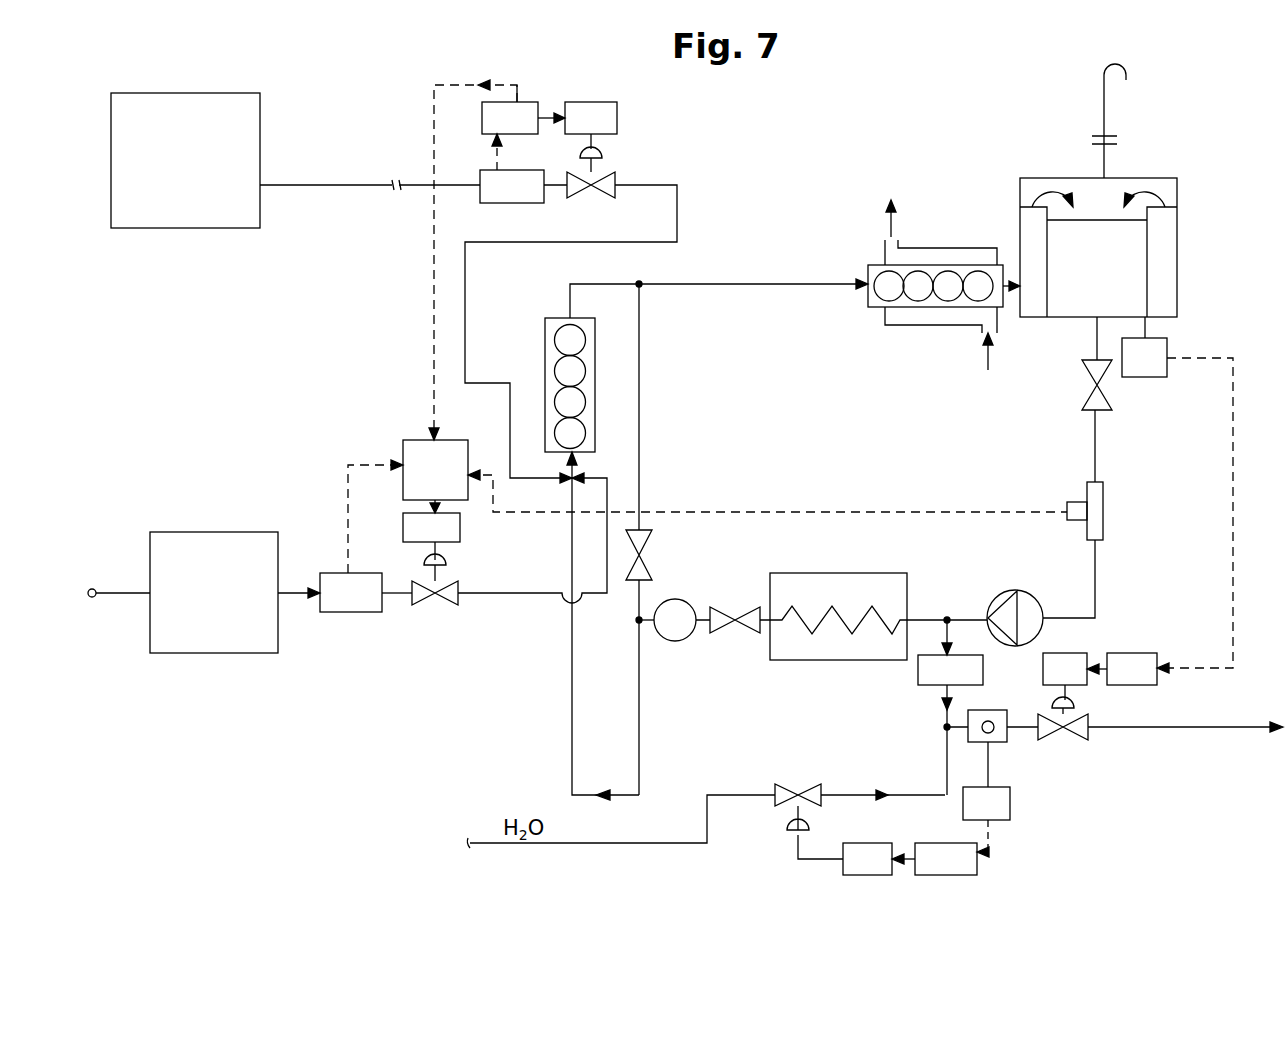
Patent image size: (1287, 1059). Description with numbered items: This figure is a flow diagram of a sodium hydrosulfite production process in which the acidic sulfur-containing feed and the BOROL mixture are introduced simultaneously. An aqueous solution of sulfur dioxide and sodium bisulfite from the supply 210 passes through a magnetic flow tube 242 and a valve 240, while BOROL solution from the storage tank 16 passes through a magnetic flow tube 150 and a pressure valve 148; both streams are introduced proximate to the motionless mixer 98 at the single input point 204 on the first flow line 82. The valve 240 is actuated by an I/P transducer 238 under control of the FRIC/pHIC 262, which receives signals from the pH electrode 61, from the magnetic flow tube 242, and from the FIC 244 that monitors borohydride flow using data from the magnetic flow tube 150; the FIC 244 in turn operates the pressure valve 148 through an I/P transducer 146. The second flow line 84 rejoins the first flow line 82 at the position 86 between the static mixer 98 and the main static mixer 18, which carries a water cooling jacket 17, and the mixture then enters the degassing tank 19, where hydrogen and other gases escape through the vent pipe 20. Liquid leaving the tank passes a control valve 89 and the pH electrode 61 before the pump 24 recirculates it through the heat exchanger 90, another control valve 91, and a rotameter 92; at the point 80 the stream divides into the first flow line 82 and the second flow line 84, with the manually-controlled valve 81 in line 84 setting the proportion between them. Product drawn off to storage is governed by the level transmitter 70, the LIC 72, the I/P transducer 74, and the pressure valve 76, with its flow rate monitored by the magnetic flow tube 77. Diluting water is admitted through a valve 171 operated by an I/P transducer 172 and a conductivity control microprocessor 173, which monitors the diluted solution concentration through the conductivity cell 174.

The storage tank 16 is at (111, 176).
The FIC 244 is at (520, 95).
The I/P transducer 146 is at (617, 118).
The pressure valve 148 is at (584, 193).
The MFT 150 is at (510, 203).
The static mixer 98 is at (552, 318).
The input point 204 is at (568, 482).
The position 86 is at (648, 282).
The second flow line 84 is at (642, 395).
The manually-controlled valve 81 is at (650, 536).
The point 80 is at (636, 622).
The first flow line 82 is at (642, 742).
The rotameter 92 is at (672, 641).
The control valve 91 is at (716, 606).
The heat exchanger 90 is at (823, 573).
The pump 24 is at (1015, 590).
The pH electrode 61 is at (1103, 525).
The control valve 89 is at (1090, 392).
The FRIC/pHIC 262 is at (442, 440).
The I/P transducer 238 is at (448, 542).
The valve 240 is at (432, 604).
The magnetic flow tube 242 is at (356, 612).
The supply 210 is at (150, 634).
The water cooling jacket 17 is at (954, 248).
The static mixer 18 is at (916, 272).
The degassing tank 19 is at (1177, 268).
The vent pipe 20 is at (1106, 105).
The level transmitter 70 is at (1167, 352).
The LIC 72 is at (1112, 653).
The I/P transducer 74 is at (1048, 653).
The pressure valve 76 is at (1056, 738).
The magnetic flow tube 77 is at (930, 685).
The conductivity cell 174 is at (1010, 790).
The conductivity control microprocessor 173 is at (977, 875).
The I/P transducer 172 is at (843, 870).
The valve 171 is at (780, 784).